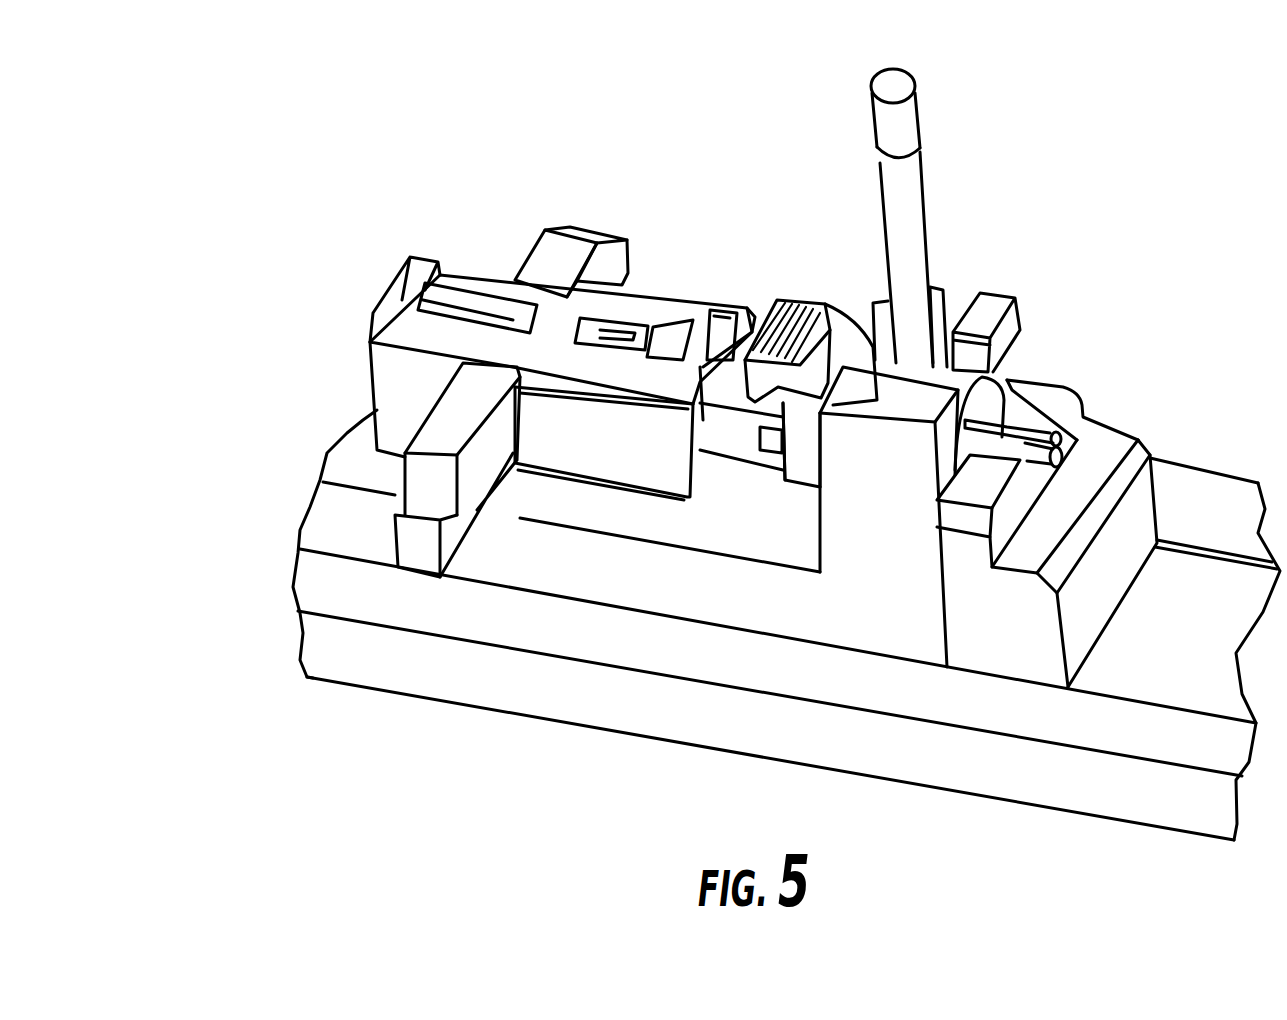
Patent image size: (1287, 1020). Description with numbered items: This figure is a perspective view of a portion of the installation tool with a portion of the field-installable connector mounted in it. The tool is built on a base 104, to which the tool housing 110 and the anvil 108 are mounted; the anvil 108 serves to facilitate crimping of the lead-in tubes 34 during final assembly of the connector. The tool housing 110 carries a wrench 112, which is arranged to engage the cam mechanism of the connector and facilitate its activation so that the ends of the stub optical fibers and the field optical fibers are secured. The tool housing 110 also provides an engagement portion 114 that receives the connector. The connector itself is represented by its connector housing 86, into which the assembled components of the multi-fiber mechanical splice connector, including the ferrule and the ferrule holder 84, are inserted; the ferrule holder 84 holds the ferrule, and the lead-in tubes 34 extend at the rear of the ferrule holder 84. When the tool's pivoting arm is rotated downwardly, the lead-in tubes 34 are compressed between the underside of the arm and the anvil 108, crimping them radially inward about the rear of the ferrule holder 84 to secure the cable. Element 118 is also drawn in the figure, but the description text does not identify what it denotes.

The lead-in tube 34 is at (1040, 437).
The ferrule holder 84 is at (988, 437).
The connector housing 86 is at (833, 322).
The base 104 is at (430, 657).
The anvil 108 is at (1087, 440).
The tool housing 110 is at (875, 605).
The wrench 112 is at (908, 192).
The engagement portion 114 is at (556, 253).
The connector housing 118 is at (637, 297).